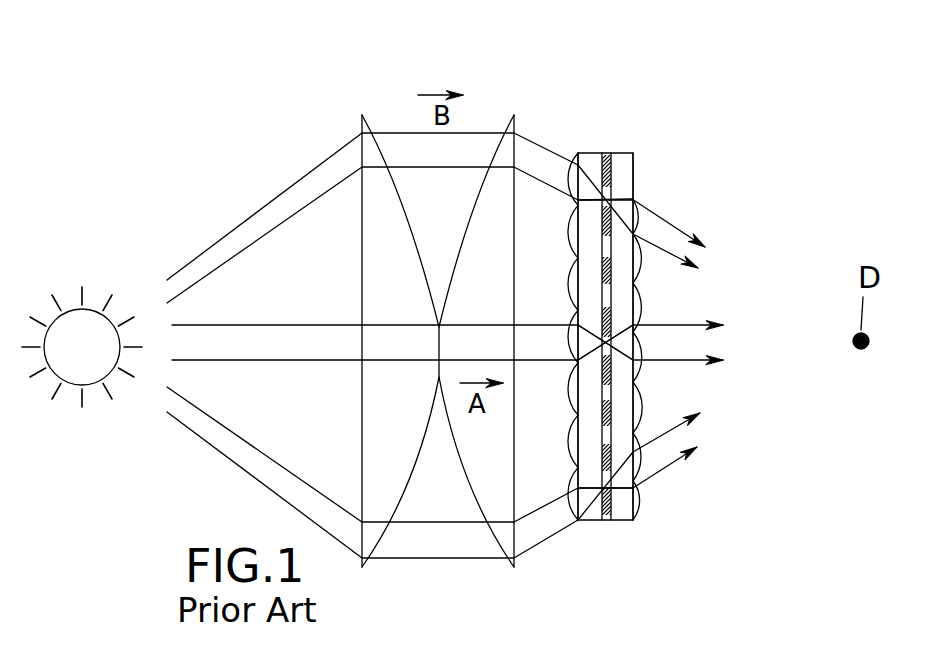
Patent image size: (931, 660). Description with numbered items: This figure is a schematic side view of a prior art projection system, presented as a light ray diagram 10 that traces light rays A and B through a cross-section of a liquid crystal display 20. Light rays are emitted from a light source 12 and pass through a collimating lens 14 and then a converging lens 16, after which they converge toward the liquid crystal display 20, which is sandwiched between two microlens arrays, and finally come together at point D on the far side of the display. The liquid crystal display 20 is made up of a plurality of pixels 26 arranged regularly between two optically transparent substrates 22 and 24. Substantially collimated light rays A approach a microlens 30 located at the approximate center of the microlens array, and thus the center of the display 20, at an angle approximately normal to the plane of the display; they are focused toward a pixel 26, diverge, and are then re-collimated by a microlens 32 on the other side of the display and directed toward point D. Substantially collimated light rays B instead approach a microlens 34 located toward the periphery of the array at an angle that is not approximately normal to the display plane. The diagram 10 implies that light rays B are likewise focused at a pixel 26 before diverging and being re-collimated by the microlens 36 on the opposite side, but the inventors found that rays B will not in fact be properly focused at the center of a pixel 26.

The light ray diagram 10 is at (327, 83).
The light source 12 is at (72, 310).
The collimating lens 14 is at (380, 540).
The converging lens 16 is at (498, 540).
The liquid crystal display 20 is at (645, 123).
The optically transparent substrate 22 is at (588, 153).
The optically transparent substrate 24 is at (635, 160).
The pixel 26 is at (612, 292).
The microlens 30 is at (576, 336).
The microlens 32 is at (643, 355).
The microlens 34 is at (577, 191).
The microlens 36 is at (640, 215).